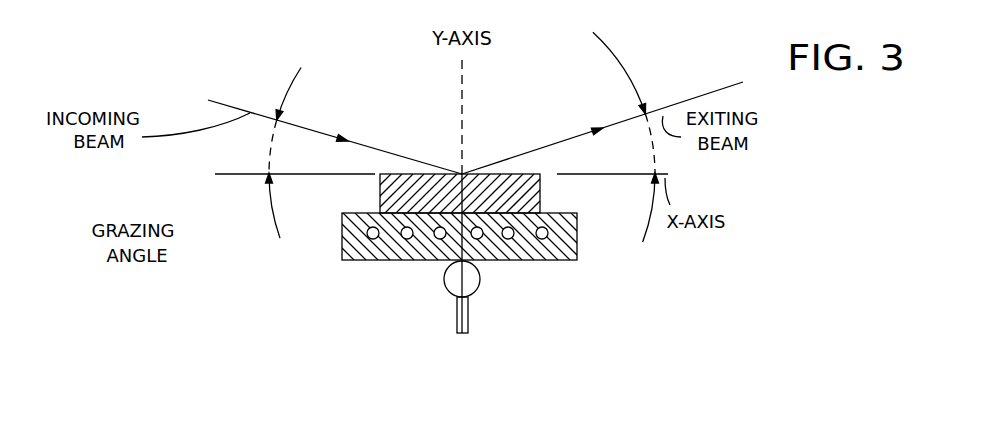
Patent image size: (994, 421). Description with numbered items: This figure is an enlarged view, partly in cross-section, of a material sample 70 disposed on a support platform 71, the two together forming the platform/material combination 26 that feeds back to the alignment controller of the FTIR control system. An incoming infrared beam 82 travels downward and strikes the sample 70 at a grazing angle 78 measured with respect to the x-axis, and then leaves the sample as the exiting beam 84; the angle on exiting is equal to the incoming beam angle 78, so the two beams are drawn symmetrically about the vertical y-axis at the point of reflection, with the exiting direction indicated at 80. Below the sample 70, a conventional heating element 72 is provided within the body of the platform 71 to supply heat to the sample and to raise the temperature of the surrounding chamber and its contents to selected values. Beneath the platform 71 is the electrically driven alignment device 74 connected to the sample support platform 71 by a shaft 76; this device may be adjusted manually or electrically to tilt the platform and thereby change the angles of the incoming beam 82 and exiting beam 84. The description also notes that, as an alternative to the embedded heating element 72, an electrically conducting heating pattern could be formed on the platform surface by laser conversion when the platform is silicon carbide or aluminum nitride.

The support platform arrangement 26 is at (624, 256).
The material sample 70 is at (380, 197).
The support platform 71 is at (577, 249).
The heating element 72 is at (508, 239).
The electrically driven alignment device 74 is at (449, 292).
The shaft 76 is at (469, 317).
The grazing angle 78 is at (243, 162).
The exiting beam 80 is at (666, 153).
The incoming infrared beam 82 is at (372, 149).
The exiting beam 84 is at (700, 97).